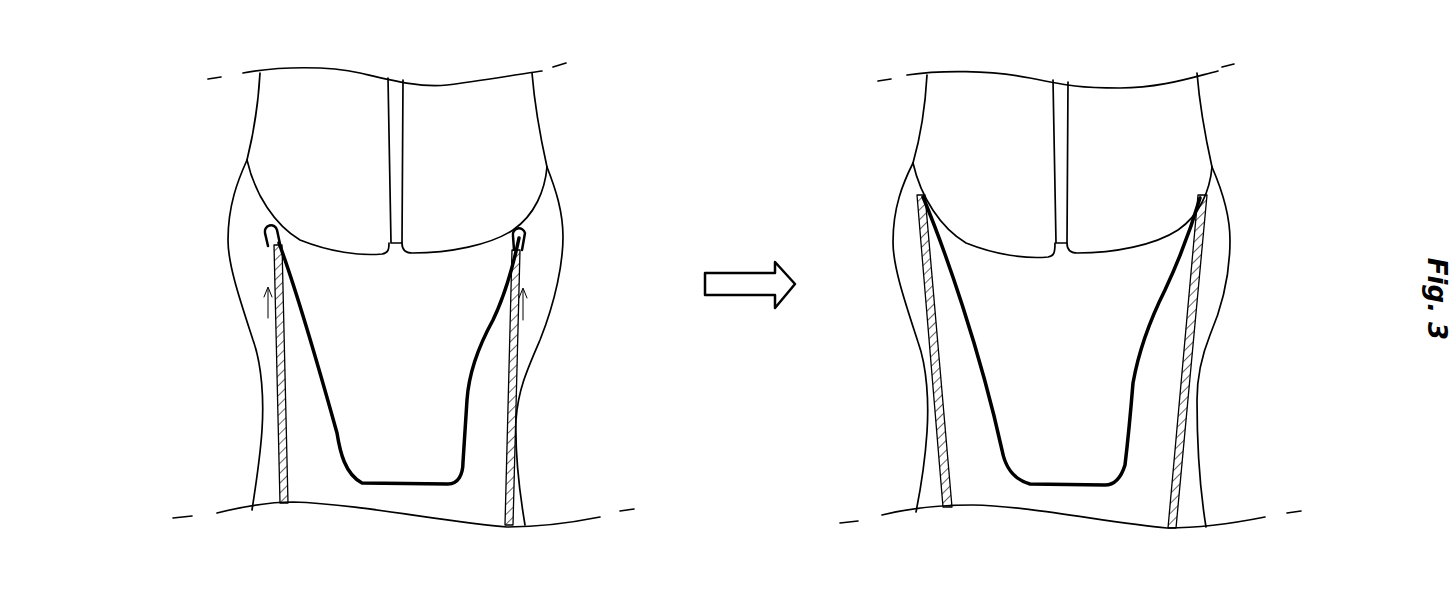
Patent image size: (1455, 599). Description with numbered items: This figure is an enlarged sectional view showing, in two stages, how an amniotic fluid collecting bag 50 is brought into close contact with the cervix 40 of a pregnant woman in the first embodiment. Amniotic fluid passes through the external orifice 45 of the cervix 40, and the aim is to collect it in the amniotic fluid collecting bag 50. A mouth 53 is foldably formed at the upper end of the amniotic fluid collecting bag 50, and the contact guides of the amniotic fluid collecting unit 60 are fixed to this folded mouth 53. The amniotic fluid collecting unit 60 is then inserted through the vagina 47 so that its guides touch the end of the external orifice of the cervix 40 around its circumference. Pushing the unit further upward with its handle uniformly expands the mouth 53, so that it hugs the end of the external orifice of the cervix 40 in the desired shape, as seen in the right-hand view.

The cervix 40 is at (492, 125).
The external orifice 45 is at (403, 223).
The vagina 47 is at (255, 259).
The amniotic fluid collecting bag 50 is at (478, 343).
The mouth 53 is at (523, 247).
The amniotic fluid collecting unit 60 is at (513, 272).